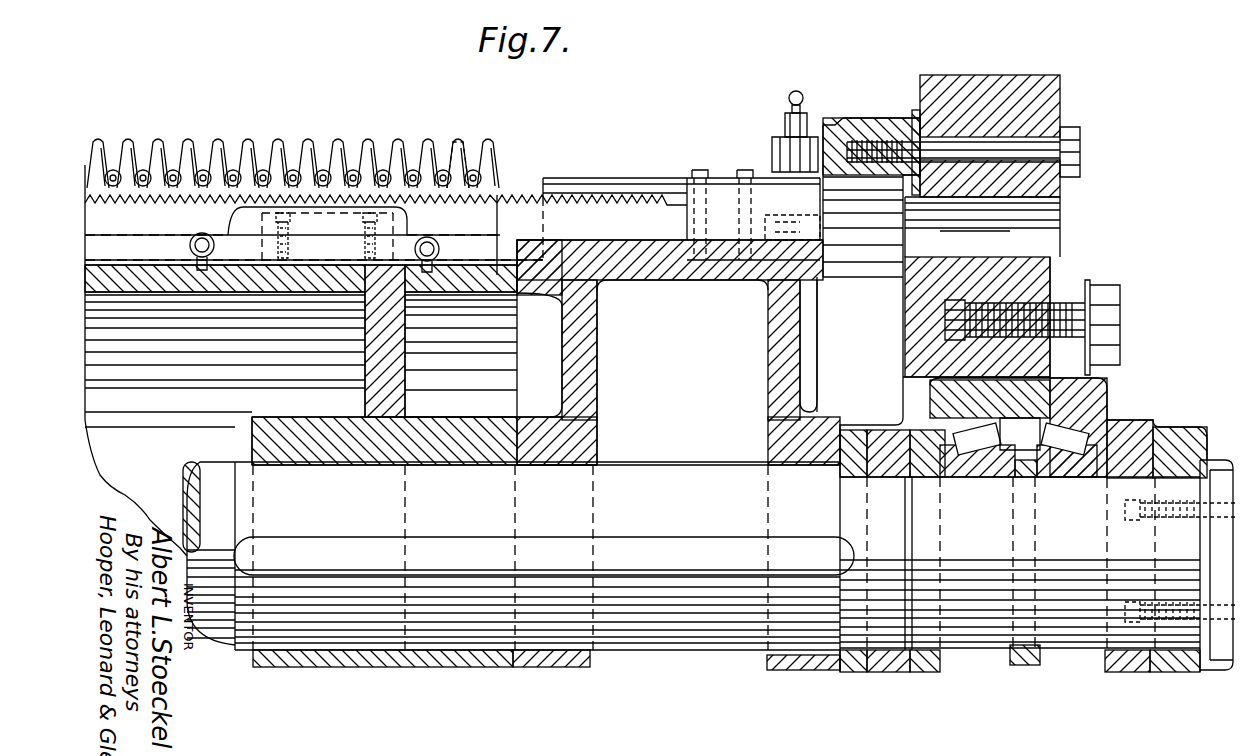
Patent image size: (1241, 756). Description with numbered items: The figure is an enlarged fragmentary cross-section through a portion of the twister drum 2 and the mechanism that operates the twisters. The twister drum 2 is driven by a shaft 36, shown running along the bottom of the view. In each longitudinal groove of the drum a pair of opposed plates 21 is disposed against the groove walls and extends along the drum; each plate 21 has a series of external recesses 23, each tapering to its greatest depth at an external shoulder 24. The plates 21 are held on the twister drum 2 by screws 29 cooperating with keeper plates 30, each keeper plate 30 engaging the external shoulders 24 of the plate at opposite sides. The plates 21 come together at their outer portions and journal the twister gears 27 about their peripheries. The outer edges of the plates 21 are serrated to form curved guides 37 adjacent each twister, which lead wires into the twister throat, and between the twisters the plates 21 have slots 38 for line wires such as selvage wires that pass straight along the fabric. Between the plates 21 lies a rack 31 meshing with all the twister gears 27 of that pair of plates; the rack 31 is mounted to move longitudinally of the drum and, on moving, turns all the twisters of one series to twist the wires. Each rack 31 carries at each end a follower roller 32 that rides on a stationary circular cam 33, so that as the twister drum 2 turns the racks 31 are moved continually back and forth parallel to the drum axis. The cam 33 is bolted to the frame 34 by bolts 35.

The twister drum 2 is at (110, 275).
The plates 21 is at (147, 275).
The external recesses 23 is at (313, 223).
The external shoulder 24 is at (230, 228).
The twister gears 27 is at (452, 160).
The screws 29 is at (292, 248).
The keeper plates 30 is at (410, 222).
The rack 31 is at (522, 193).
The follower roller 32 is at (772, 148).
The stationary circular cam 33 is at (848, 126).
The frame 34 is at (1032, 105).
The bolts 35 is at (1032, 165).
The shaft 36 is at (690, 625).
The curved guides 37 is at (245, 165).
The slots 38 is at (180, 175).